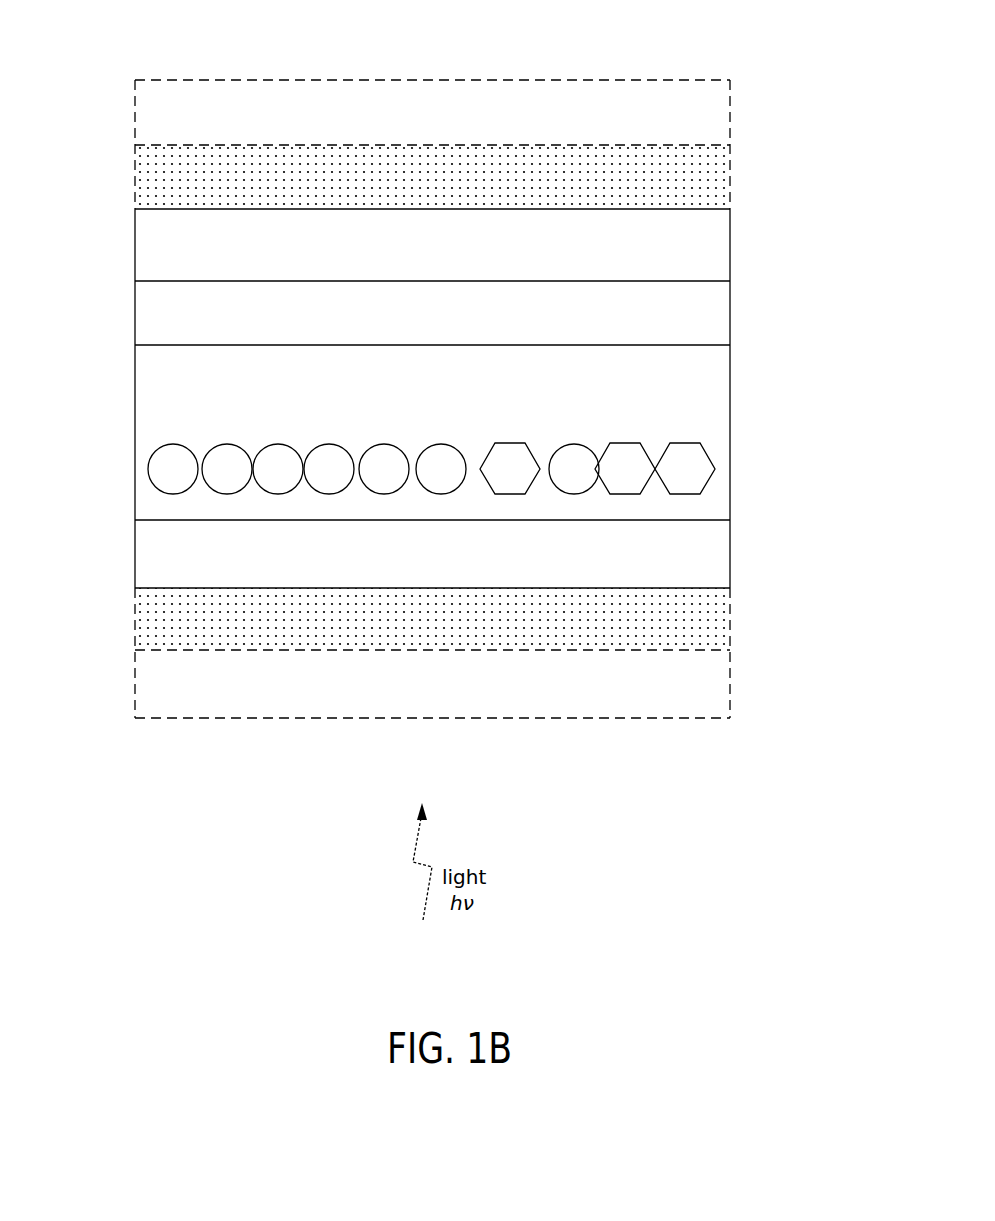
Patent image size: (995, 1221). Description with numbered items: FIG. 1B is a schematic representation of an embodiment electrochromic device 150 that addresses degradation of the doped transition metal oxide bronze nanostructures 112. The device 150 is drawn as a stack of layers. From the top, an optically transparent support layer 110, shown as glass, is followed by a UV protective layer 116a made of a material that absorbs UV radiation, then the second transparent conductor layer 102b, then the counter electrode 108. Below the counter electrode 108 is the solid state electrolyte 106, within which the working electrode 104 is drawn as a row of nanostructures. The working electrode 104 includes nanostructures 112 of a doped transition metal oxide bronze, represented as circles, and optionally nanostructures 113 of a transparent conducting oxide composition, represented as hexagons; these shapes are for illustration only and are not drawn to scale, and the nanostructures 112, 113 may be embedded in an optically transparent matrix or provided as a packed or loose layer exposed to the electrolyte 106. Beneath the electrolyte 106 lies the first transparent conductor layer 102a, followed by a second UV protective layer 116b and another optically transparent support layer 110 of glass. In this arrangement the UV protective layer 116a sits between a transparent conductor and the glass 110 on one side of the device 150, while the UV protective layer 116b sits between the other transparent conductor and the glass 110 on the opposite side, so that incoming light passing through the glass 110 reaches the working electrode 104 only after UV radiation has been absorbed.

The electrochromic device 150 is at (790, 112).
The optically transparent support layer 110 is at (135, 113).
The first protective layer 116a is at (135, 180).
The second protective layer 116b is at (135, 620).
The second transparent conductor layer 102b is at (135, 242).
The first transparent conductor layer 102a is at (135, 565).
The counter electrode 108 is at (135, 300).
The solid state electrolyte 106 is at (479, 432).
The working electrode 104 is at (446, 471).
The nanostructures of doped transition metal oxide bronze 112 is at (210, 452).
The nanostructures of transparent conducting oxide 113 is at (646, 494).